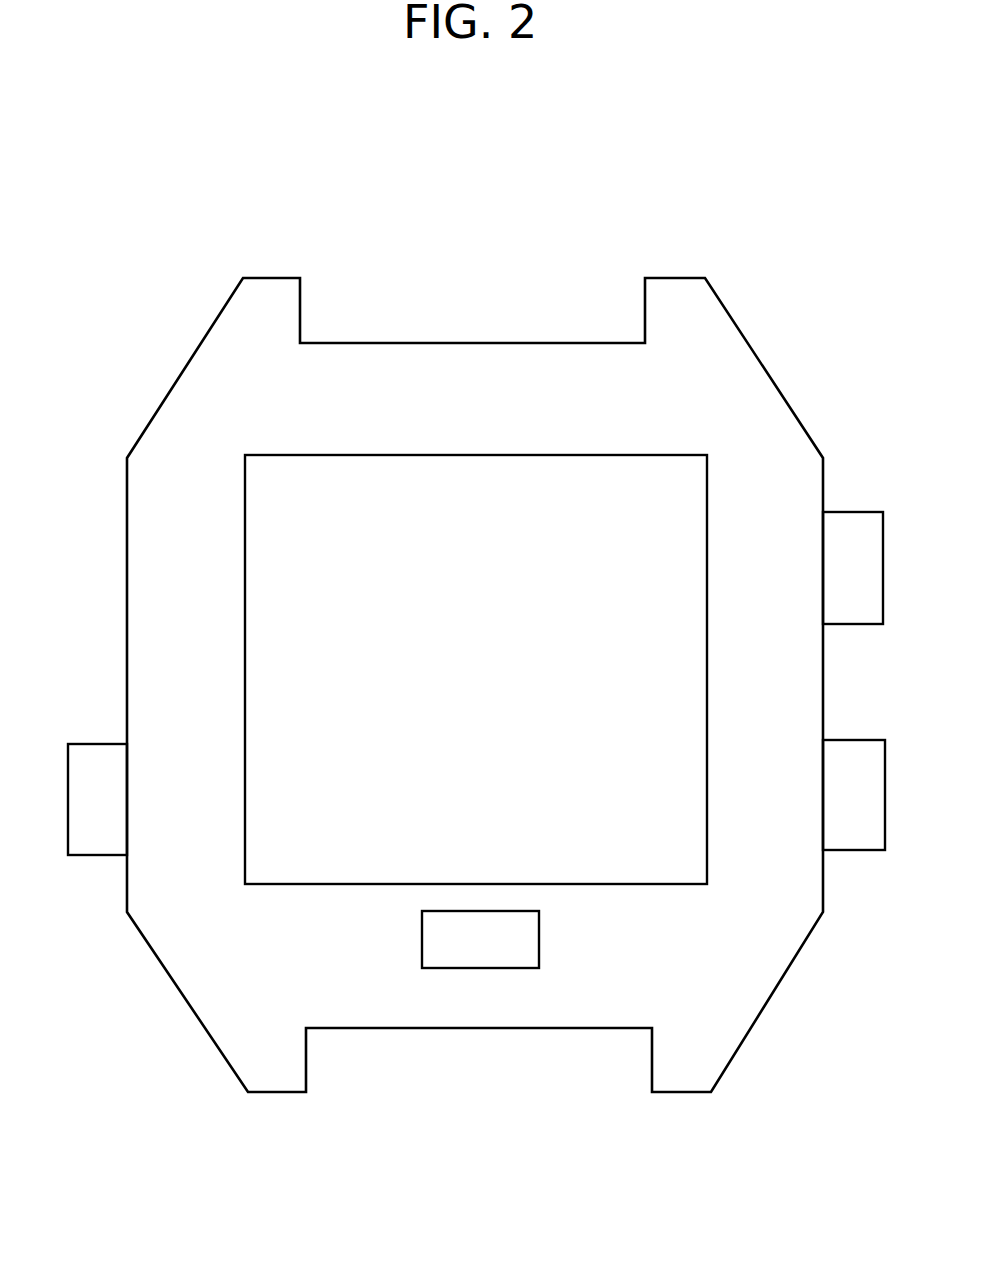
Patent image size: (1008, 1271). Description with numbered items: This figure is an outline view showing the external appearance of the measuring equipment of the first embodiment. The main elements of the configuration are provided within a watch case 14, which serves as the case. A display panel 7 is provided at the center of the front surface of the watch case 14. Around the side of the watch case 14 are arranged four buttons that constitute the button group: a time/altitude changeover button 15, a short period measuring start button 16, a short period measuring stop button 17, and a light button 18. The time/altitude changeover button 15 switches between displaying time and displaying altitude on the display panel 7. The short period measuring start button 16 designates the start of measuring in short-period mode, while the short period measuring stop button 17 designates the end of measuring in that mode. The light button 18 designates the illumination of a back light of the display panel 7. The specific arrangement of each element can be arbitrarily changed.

The watch case 14 is at (682, 277).
The display panel 7 is at (678, 884).
The time/altitude changeover button 15 is at (87, 744).
The short period measuring start button 16 is at (865, 512).
The short period measuring stop button 17 is at (865, 740).
The light button 18 is at (485, 968).